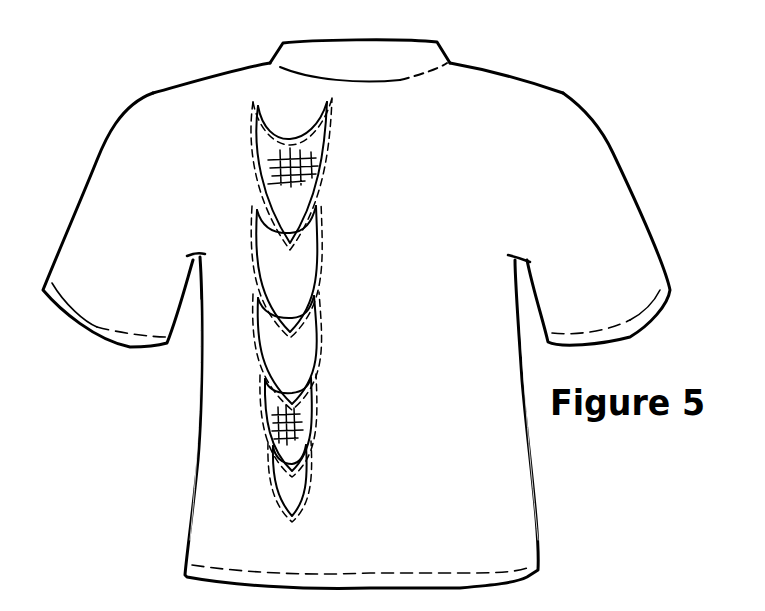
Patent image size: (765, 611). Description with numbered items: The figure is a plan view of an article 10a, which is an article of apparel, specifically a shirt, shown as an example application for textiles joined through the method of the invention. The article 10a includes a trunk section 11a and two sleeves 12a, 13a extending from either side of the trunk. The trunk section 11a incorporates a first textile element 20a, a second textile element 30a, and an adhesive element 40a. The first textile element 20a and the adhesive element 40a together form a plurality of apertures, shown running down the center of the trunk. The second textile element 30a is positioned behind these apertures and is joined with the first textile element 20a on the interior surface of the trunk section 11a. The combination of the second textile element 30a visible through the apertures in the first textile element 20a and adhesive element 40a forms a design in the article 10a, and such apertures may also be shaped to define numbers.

The article 10a is at (603, 101).
The trunk section 11a is at (512, 487).
The sleeve 12a is at (630, 230).
The sleeve 13a is at (82, 228).
The first textile element 20a is at (210, 478).
The second textile element 30a is at (290, 350).
The adhesive element 40a is at (328, 318).